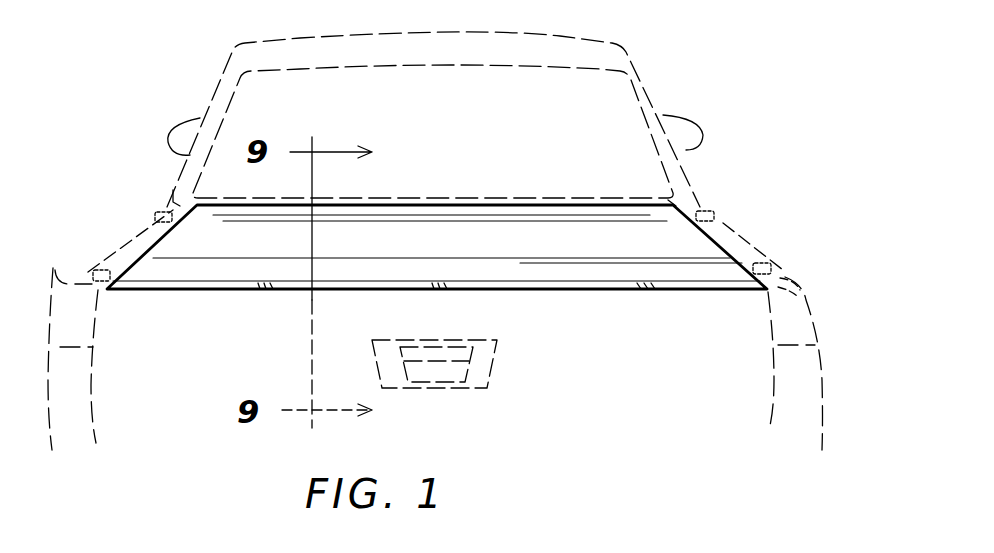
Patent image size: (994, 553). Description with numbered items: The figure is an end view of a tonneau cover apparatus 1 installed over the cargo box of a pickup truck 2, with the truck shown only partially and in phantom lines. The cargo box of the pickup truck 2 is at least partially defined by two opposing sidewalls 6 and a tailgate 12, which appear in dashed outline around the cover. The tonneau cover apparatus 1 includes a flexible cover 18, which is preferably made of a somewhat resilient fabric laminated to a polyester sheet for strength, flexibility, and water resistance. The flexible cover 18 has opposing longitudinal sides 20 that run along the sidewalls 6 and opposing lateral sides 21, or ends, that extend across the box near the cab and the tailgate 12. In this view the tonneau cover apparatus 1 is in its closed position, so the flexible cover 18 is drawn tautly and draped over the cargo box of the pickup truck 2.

The tonneau cover apparatus 1 is at (701, 260).
The pickup truck 2 is at (648, 73).
The sidewalls 6 is at (55, 337).
The tailgate 12 is at (617, 383).
The flexible cover 18 is at (427, 255).
The longitudinal sides 20 is at (150, 243).
The lateral sides 21 is at (432, 204).